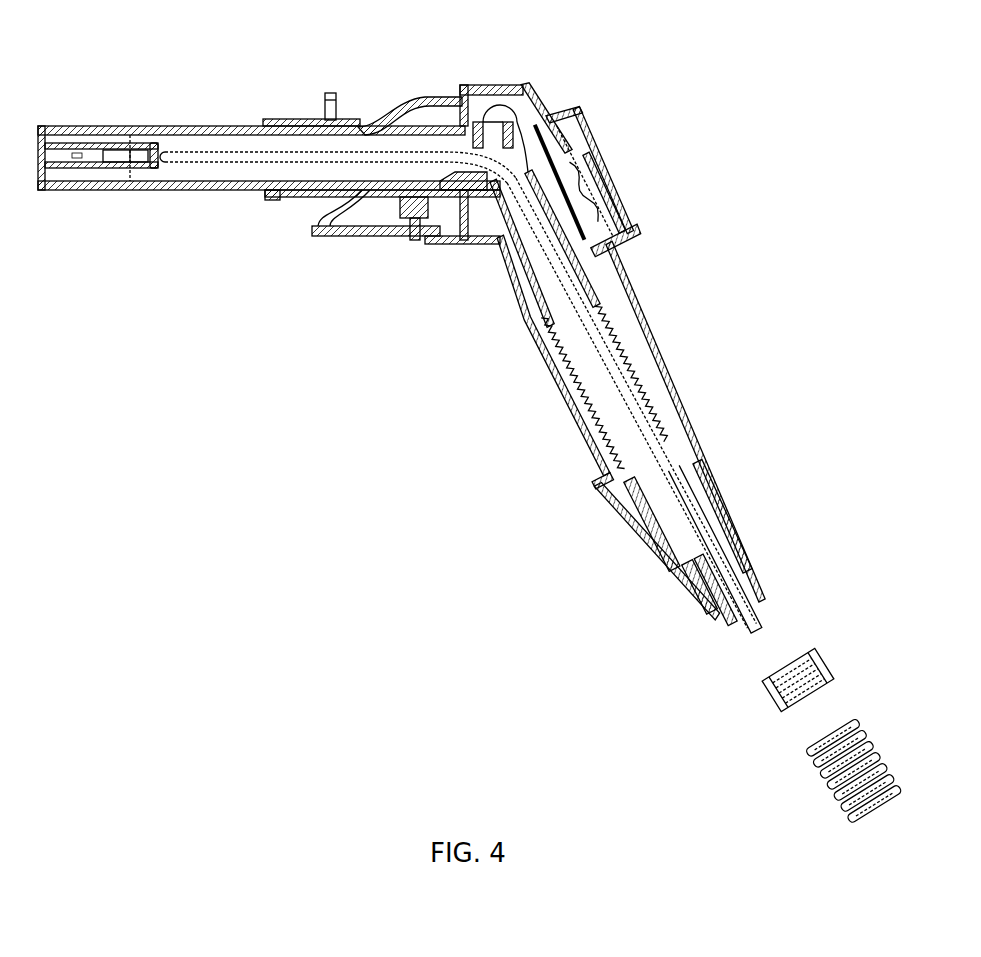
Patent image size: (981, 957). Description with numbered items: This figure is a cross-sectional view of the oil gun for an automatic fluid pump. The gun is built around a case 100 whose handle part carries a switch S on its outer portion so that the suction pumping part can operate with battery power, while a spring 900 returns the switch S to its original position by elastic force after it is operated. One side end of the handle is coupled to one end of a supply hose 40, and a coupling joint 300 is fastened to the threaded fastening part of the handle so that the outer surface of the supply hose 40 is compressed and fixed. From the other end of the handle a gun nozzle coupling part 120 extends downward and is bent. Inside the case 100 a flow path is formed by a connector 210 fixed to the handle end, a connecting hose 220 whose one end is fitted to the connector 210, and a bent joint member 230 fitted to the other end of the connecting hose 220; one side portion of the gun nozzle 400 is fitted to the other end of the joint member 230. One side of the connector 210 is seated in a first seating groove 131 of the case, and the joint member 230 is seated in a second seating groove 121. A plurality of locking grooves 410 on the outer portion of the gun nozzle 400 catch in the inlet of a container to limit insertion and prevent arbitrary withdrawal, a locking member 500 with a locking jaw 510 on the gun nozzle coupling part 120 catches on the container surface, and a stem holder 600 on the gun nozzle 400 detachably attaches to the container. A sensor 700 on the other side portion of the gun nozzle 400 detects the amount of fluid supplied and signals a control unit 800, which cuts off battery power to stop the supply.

The gun nozzle 400 is at (198, 125).
The stem holder 600 is at (272, 119).
The locking member 500 is at (387, 110).
The gun nozzle coupling part 120 is at (450, 115).
The joint member 230 is at (575, 103).
The control unit 800 is at (600, 150).
The switch S is at (617, 170).
The spring 900 is at (620, 210).
The case 100 is at (648, 300).
The sensor 700 is at (113, 190).
The locking grooves 410 is at (307, 193).
The locking jaw 510 is at (333, 233).
The second seating groove 121 is at (423, 240).
The connecting hose 220 is at (533, 360).
The first seating groove 131 is at (707, 470).
The connector 210 is at (747, 513).
The coupling joint 300 is at (767, 697).
The supply hose 40 is at (820, 787).